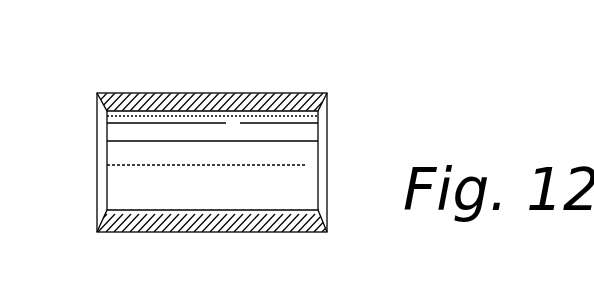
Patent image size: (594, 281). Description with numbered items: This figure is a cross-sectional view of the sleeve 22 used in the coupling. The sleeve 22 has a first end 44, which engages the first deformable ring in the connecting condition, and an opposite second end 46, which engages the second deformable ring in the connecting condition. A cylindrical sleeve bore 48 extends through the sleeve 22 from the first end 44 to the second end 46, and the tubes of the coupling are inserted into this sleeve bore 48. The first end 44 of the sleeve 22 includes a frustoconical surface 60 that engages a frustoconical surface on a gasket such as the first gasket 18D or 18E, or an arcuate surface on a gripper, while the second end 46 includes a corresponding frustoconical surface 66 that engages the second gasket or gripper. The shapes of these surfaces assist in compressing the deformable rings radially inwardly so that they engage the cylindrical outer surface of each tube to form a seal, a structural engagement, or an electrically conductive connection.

The sleeve 22 is at (189, 80).
The first end 44 is at (97, 94).
The second end 46 is at (327, 93).
The sleeve bore 48 is at (303, 149).
The frustoconical surface 60 is at (97, 193).
The frustoconical surface 66 is at (327, 190).
The first gasket 18D is at (119, 275).
The first gasket 18E is at (429, 275).